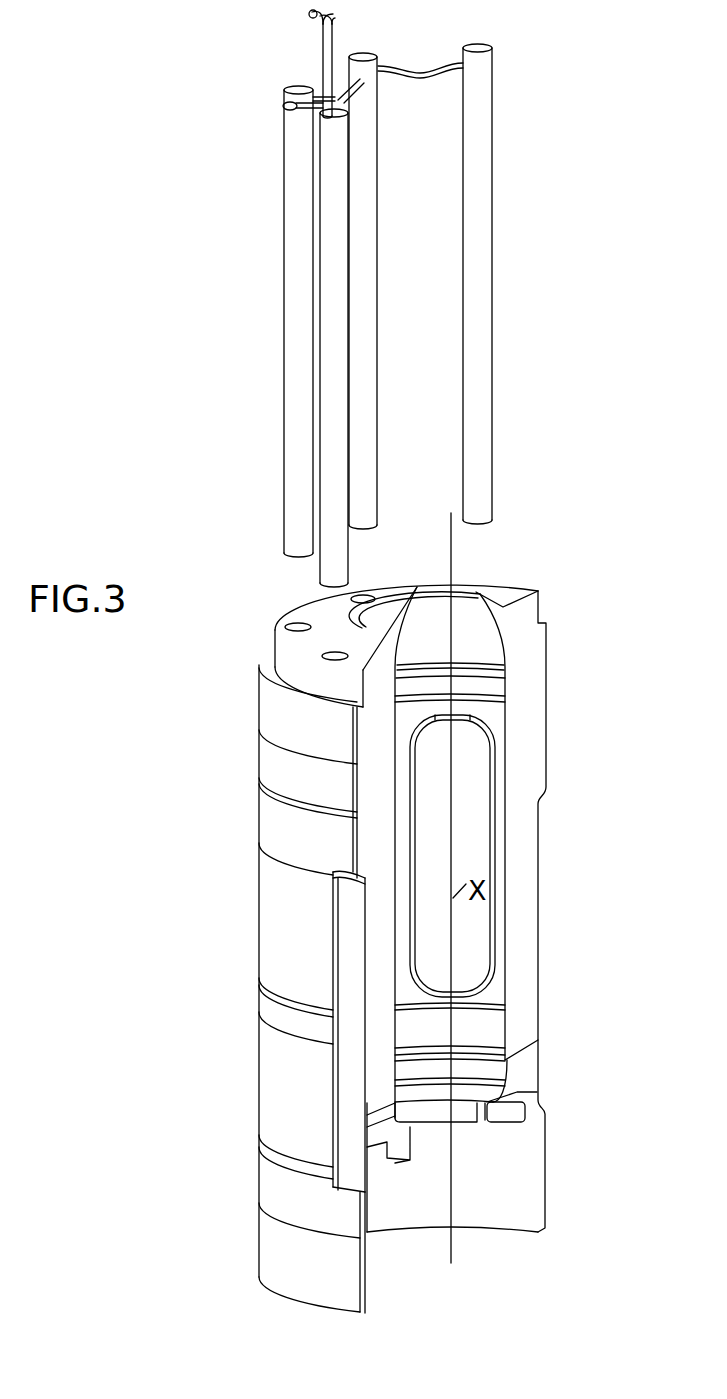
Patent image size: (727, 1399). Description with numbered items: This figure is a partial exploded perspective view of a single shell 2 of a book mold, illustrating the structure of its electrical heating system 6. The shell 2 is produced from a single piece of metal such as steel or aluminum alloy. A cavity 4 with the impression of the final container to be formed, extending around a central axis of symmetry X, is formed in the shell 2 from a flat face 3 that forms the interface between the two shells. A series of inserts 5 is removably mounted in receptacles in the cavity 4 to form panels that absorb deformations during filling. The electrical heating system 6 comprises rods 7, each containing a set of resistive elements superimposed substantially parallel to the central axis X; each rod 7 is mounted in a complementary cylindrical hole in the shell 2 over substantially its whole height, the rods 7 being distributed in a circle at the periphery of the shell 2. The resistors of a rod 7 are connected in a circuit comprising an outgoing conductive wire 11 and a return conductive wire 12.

The half-mold 2 is at (258, 768).
The flat face 3 is at (527, 731).
The cavity 4 is at (515, 805).
The inserts 5 is at (474, 931).
The electrical heating system 6 is at (278, 84).
The rods 7 is at (330, 313).
The outgoing conductive wire 11 is at (331, 48).
The return conductive wire 12 is at (322, 40).